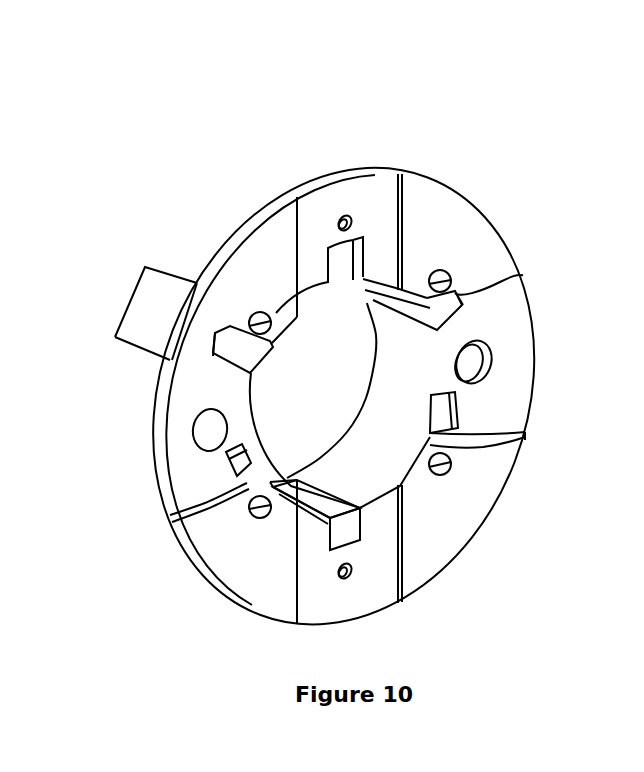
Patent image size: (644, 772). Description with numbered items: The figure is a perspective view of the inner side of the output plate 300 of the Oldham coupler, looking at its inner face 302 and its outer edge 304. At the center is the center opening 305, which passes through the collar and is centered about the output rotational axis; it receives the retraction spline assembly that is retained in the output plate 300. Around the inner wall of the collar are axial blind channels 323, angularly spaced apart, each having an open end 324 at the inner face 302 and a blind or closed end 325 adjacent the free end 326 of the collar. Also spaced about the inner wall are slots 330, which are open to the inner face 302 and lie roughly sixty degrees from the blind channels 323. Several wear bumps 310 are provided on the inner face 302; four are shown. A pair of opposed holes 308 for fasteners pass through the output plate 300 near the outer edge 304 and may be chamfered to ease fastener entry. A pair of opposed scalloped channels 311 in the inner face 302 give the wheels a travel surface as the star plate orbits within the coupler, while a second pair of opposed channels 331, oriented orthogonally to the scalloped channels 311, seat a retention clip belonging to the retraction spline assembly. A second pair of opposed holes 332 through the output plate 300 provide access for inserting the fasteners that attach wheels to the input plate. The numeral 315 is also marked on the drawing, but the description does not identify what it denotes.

The output plate 300 is at (468, 105).
The inner face 302 is at (344, 396).
The outer edge 304 is at (223, 250).
The center opening 305 is at (410, 378).
The opposed holes 308 is at (342, 214).
The wear bumps 310 is at (259, 312).
The scalloped channels 311 is at (532, 373).
The front face 315 is at (213, 356).
The axial blind channels 323 is at (452, 315).
The open end 324 is at (459, 306).
The closed end 325 is at (368, 305).
The free end 326 is at (357, 410).
The slots 330 is at (373, 300).
The opposed channels 331 is at (318, 218).
The opposed holes 332 is at (492, 353).